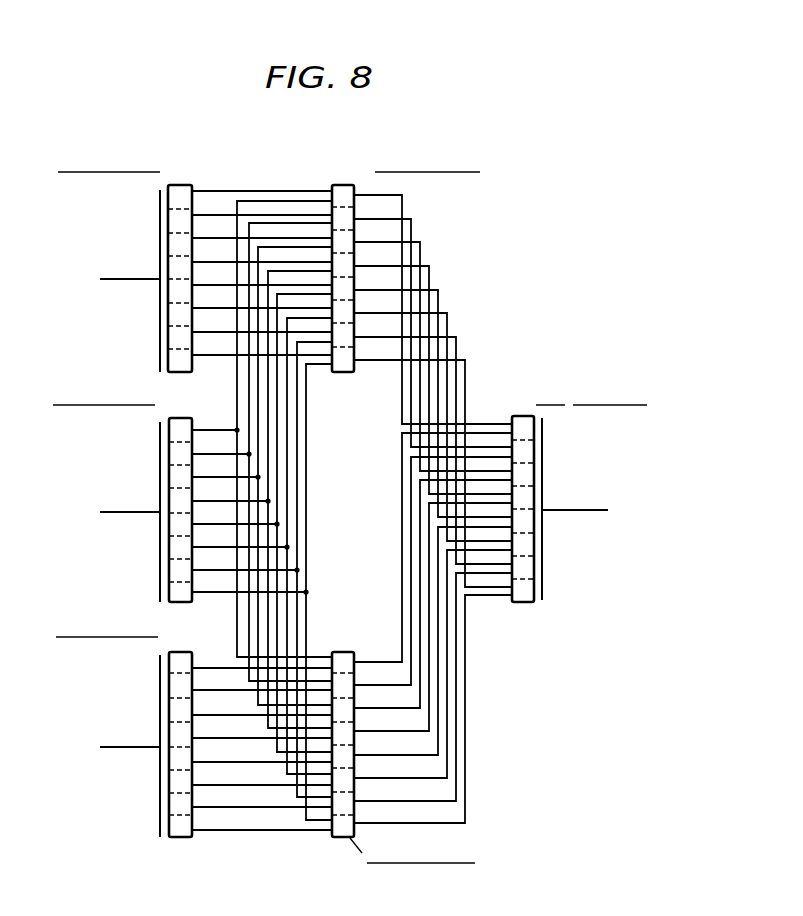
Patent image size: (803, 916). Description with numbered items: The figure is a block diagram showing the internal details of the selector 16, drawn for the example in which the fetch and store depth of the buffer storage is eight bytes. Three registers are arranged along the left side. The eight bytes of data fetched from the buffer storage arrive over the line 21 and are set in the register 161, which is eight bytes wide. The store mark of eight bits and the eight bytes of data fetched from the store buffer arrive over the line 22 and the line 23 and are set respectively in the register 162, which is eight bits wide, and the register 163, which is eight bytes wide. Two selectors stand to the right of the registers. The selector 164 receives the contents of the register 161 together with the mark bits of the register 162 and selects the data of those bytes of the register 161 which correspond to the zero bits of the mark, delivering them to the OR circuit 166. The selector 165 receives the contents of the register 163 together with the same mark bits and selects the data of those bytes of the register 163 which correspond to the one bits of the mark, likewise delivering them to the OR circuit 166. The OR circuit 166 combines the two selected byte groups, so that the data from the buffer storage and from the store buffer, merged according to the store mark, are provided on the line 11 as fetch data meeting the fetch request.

The selector 16 is at (277, 144).
The register 161 is at (182, 184).
The register 162 is at (181, 417).
The register 163 is at (181, 651).
The selector 164 is at (345, 184).
The selector 165 is at (343, 651).
The OR circuit 166 is at (520, 416).
The line 21 is at (122, 278).
The line 22 is at (130, 511).
The line 23 is at (130, 746).
The line 11 is at (585, 509).